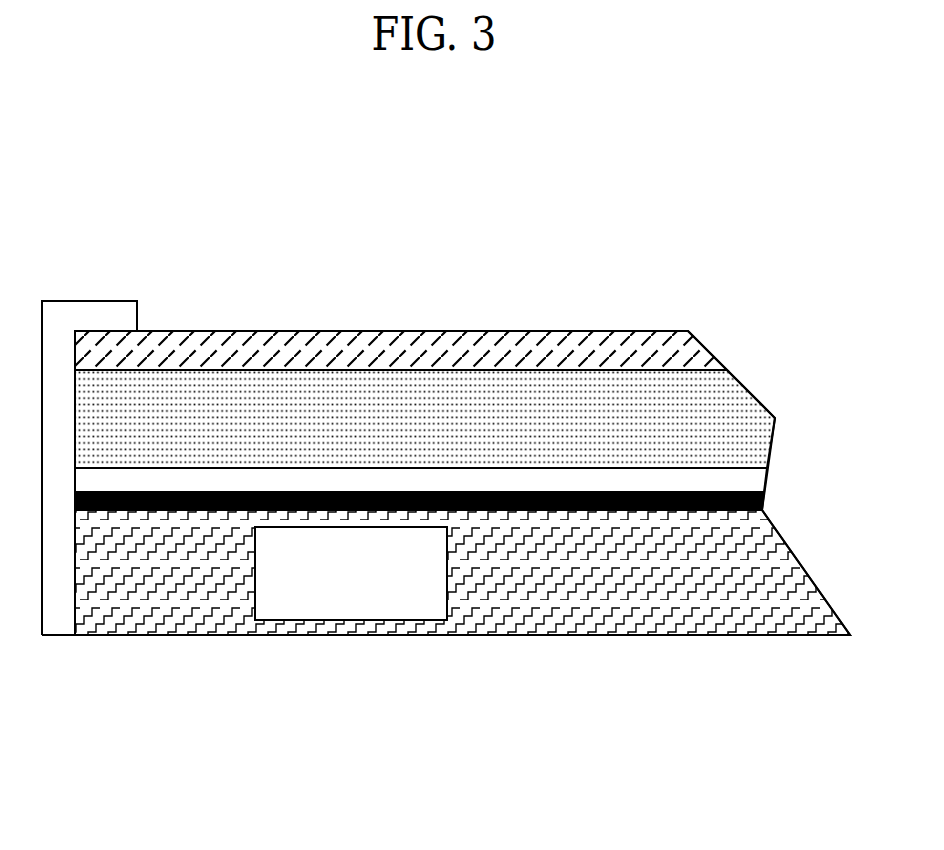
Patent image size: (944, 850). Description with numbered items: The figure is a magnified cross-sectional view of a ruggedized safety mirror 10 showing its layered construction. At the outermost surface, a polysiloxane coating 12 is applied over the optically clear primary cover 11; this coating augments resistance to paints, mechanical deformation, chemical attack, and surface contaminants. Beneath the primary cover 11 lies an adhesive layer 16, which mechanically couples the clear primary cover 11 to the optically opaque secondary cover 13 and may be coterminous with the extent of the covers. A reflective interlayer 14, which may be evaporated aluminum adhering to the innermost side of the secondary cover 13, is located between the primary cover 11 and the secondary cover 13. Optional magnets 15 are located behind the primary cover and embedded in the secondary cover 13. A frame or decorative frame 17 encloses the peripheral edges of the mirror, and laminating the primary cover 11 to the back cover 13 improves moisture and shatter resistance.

The electronic component assembly 10 is at (512, 222).
The primary cover 11 is at (755, 393).
The polysiloxane coating 12 is at (253, 328).
The secondary cover 13 is at (615, 635).
The reflective interlayer 14 is at (770, 507).
The magnets 15 is at (333, 580).
The adhesive layer 16 is at (768, 473).
The frame 17 is at (98, 295).